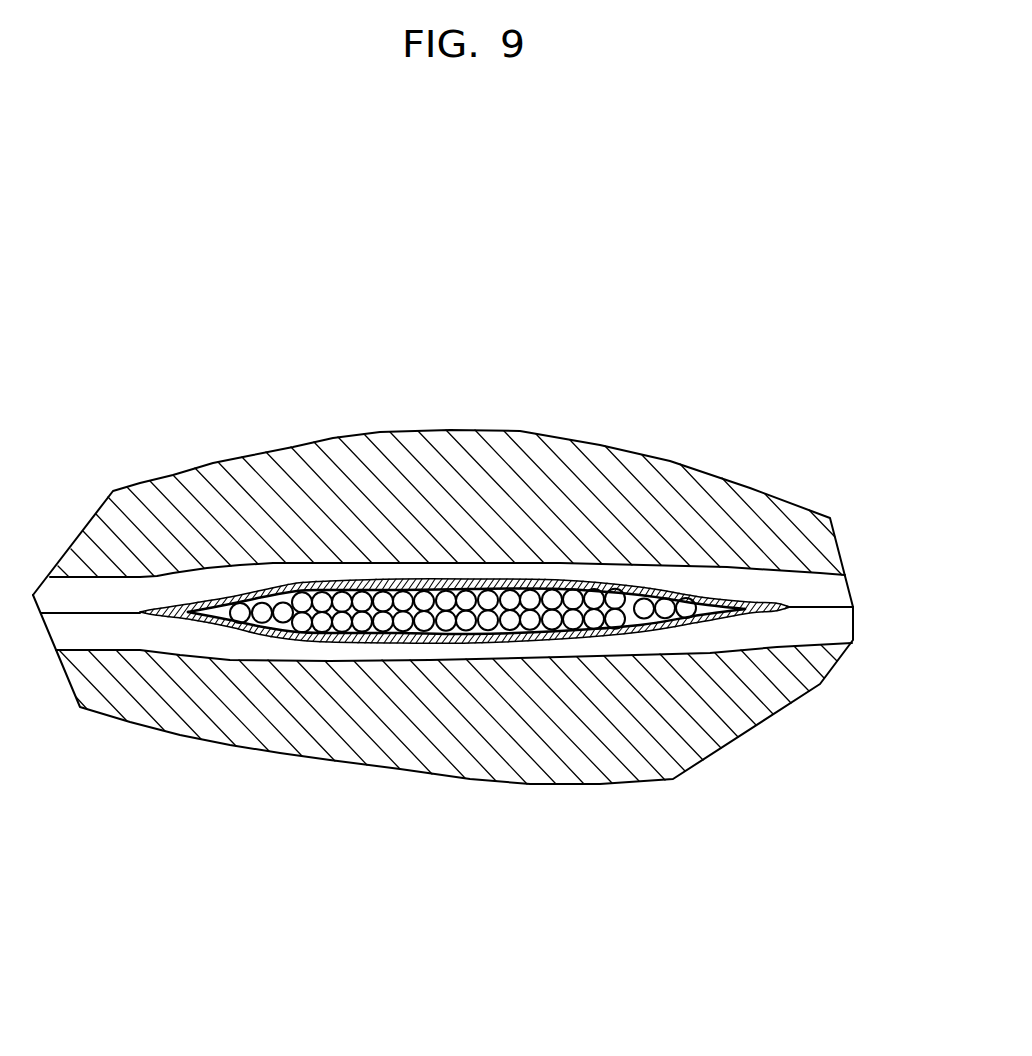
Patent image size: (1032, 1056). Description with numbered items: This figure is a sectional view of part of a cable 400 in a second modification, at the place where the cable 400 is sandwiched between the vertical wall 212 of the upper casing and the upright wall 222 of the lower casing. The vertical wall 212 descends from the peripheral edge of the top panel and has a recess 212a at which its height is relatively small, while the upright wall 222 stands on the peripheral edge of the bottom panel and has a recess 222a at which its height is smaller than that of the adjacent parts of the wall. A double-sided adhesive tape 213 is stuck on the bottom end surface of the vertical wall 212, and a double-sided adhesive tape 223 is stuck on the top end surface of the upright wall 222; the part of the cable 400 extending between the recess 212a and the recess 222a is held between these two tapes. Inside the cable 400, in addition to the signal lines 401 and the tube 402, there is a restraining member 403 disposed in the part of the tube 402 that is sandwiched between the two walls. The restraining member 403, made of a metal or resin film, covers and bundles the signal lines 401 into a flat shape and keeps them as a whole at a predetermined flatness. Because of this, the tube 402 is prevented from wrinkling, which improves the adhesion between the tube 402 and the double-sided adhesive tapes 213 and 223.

The vertical wall 212 is at (553, 457).
The recess 212a is at (671, 560).
The double-sided adhesive tape 213 is at (820, 583).
The upright wall 222 is at (510, 768).
The recess 222a is at (558, 638).
The double-sided adhesive tape 223 is at (815, 630).
The cable 400 is at (486, 576).
The signal lines 401 is at (467, 592).
The tube 402 is at (722, 596).
The restraining member 403 is at (700, 613).